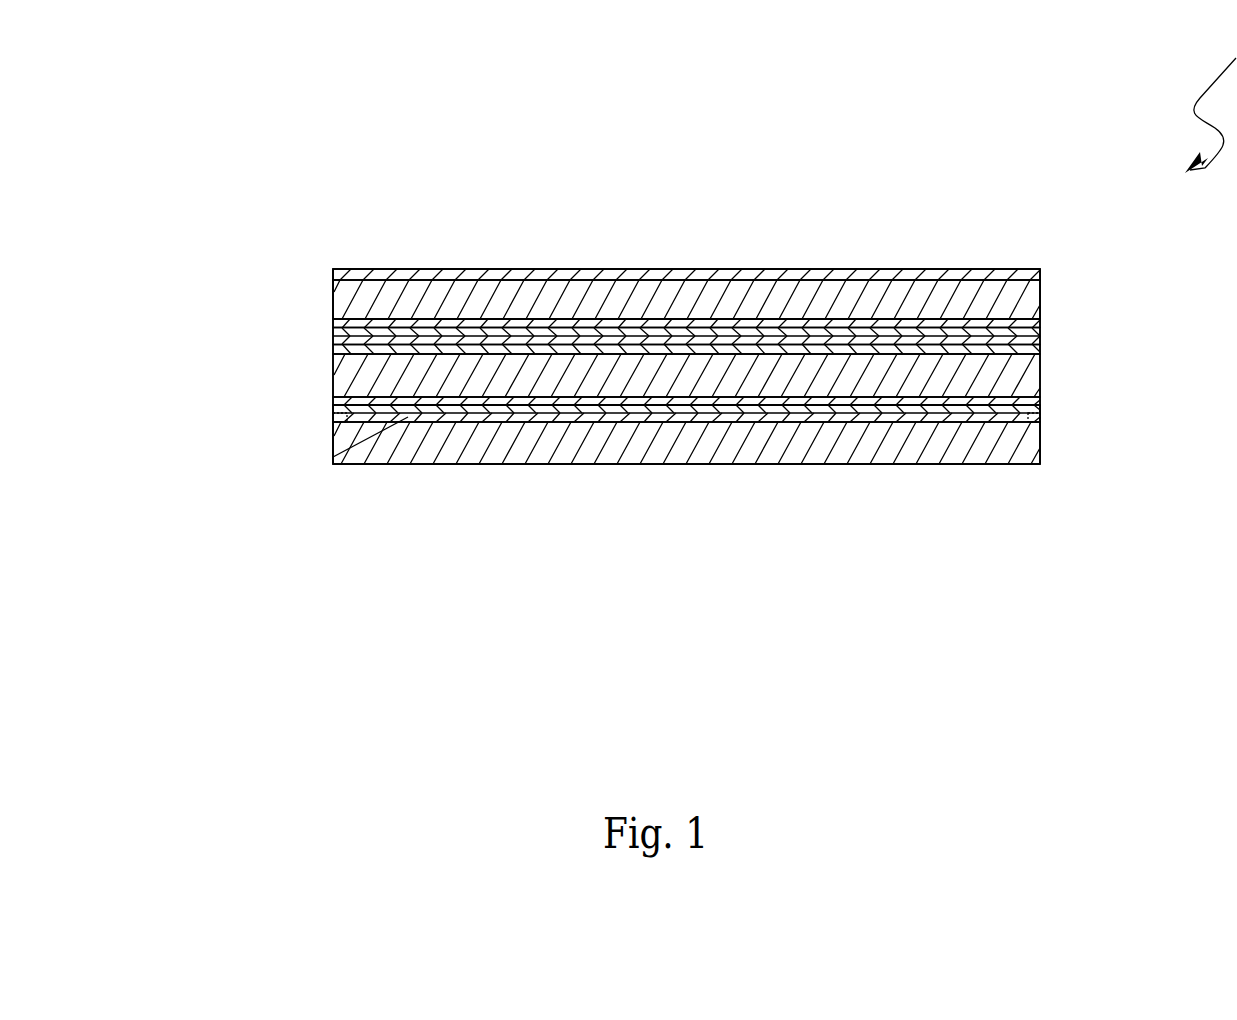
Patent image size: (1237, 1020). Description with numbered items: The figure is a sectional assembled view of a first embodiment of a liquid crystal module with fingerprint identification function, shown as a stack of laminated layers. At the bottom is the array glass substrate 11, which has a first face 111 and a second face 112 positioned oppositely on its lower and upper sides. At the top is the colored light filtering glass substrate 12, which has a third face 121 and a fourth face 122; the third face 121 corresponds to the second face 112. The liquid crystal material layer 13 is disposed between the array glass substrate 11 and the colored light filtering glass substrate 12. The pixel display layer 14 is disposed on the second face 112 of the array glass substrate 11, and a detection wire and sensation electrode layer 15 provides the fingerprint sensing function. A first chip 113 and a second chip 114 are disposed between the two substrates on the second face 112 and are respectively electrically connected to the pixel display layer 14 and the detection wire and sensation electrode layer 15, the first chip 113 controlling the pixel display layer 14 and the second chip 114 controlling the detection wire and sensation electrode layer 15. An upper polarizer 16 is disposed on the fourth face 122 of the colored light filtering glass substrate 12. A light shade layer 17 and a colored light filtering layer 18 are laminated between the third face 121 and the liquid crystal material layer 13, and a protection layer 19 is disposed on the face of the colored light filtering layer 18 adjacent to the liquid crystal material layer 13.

The array glass substrate 11 is at (1140, 437).
The first face 111 is at (1000, 465).
The second face 112 is at (1027, 420).
The first chip 113 is at (333, 419).
The second chip 114 is at (1032, 412).
The colored light filtering glass substrate 12 is at (1158, 232).
The third face 121 is at (1040, 330).
The fourth face 122 is at (1020, 280).
The liquid crystal material layer 13 is at (1018, 378).
The pixel display layer 14 is at (333, 457).
The detection wire and sensation electrode layer 15 is at (333, 402).
The upper polarizer 16 is at (333, 275).
The light shade layer 17 is at (333, 321).
The colored light filtering layer 18 is at (333, 337).
The protection layer 19 is at (333, 350).